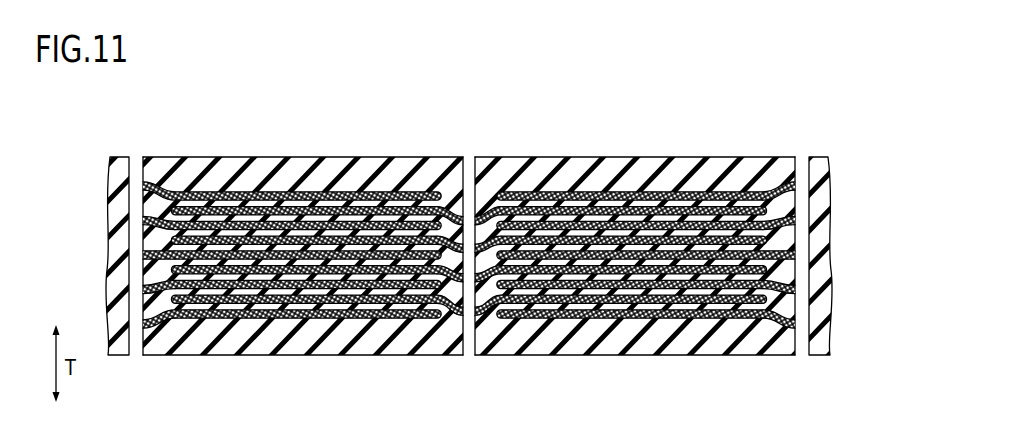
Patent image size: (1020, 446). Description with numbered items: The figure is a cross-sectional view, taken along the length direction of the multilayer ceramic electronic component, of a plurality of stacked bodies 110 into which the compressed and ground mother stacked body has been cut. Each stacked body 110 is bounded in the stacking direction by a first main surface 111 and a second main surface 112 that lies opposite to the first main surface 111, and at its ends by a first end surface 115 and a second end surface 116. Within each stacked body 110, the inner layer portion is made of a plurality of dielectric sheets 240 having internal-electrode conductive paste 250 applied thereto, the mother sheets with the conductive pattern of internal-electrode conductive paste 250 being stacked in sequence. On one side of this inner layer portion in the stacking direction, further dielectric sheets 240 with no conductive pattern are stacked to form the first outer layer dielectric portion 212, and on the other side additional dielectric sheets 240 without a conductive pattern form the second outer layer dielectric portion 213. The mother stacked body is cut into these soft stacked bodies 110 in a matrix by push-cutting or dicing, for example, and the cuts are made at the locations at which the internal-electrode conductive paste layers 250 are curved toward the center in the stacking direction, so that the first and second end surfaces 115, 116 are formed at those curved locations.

The stacked body 110 is at (339, 118).
The first main surface 111 is at (292, 146).
The second main surface 112 is at (295, 366).
The first end surface 115 is at (129, 341).
The second end surface 116 is at (457, 342).
The first outer layer dielectric portion 212 is at (412, 172).
The second outer layer dielectric portion 213 is at (402, 338).
The dielectric sheet 240 is at (469, 255).
The internal-electrode conductive paste 250 is at (458, 257).